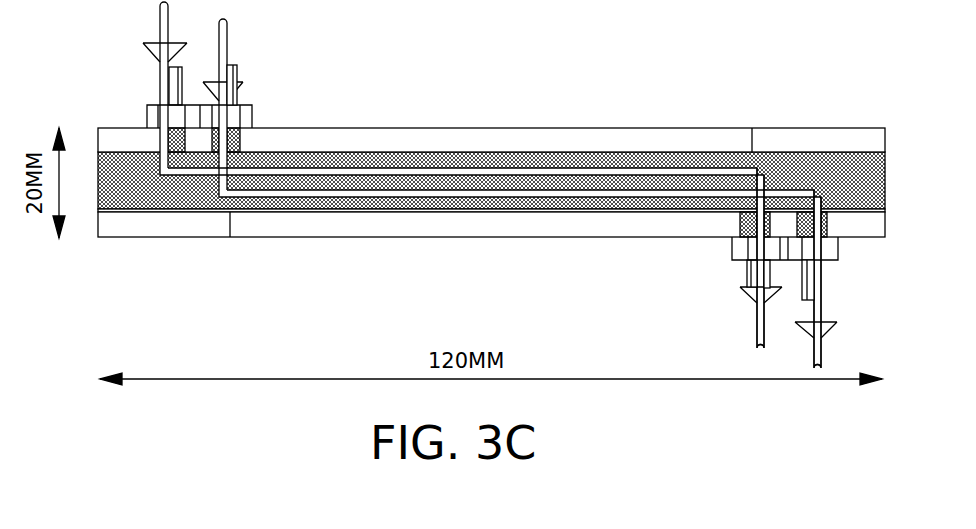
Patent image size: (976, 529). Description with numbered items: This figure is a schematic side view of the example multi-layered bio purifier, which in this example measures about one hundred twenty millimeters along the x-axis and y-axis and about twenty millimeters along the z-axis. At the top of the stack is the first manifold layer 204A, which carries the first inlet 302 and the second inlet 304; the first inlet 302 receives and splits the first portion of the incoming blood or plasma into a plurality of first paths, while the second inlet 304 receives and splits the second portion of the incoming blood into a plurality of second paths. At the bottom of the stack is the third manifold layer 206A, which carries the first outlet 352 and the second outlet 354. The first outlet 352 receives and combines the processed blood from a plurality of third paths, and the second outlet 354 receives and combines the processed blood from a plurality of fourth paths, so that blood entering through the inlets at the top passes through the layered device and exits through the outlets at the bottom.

The first inlet 302 is at (147, 107).
The second inlet 304 is at (252, 105).
The first manifold layer 204A is at (540, 128).
The third manifold layer 206A is at (535, 237).
The second outlet 354 is at (732, 260).
The first outlet 352 is at (833, 260).